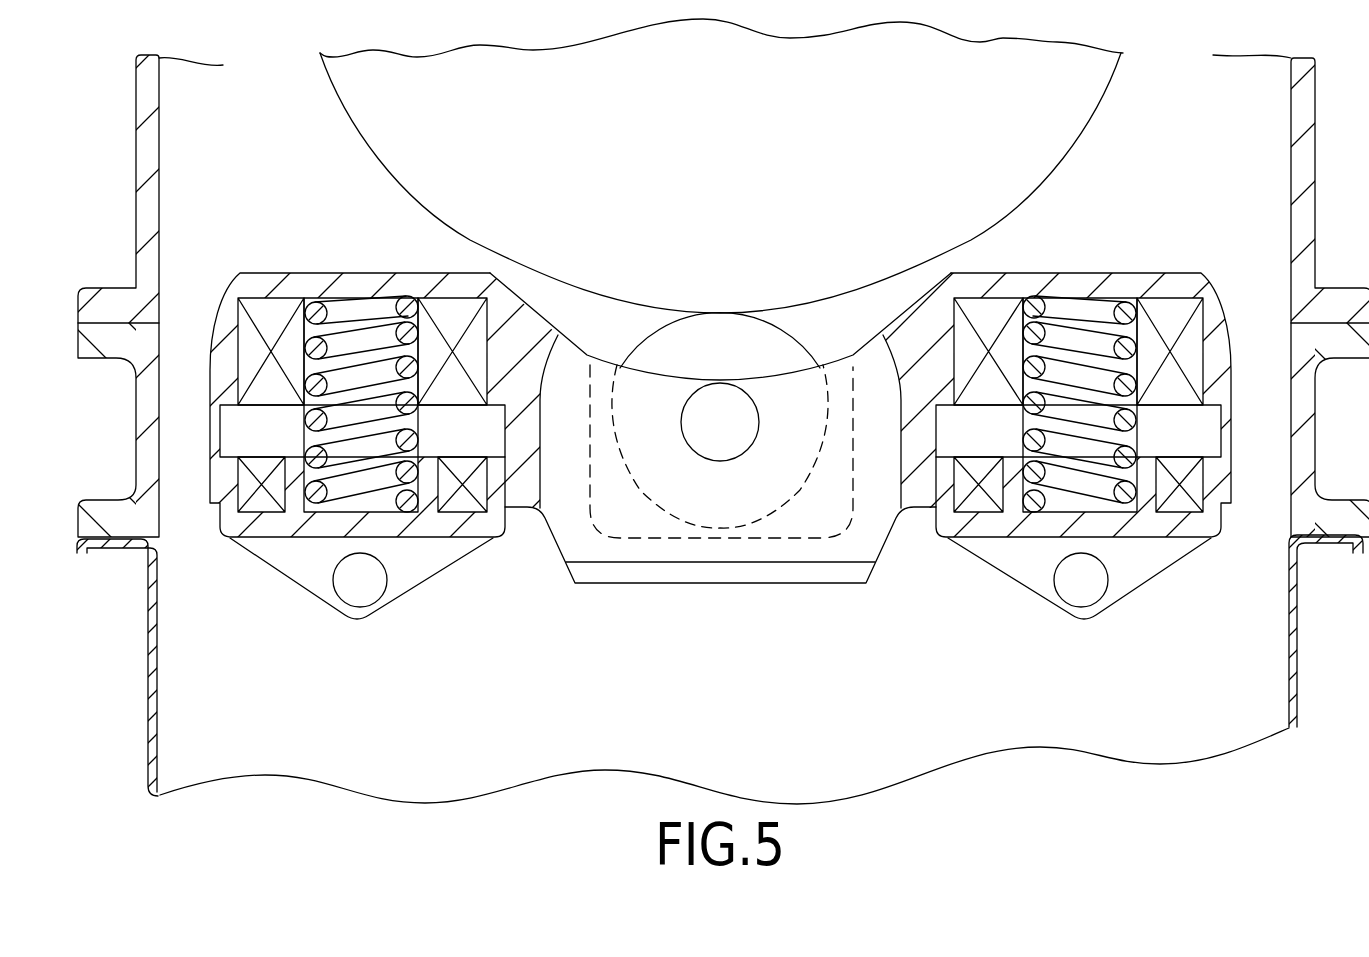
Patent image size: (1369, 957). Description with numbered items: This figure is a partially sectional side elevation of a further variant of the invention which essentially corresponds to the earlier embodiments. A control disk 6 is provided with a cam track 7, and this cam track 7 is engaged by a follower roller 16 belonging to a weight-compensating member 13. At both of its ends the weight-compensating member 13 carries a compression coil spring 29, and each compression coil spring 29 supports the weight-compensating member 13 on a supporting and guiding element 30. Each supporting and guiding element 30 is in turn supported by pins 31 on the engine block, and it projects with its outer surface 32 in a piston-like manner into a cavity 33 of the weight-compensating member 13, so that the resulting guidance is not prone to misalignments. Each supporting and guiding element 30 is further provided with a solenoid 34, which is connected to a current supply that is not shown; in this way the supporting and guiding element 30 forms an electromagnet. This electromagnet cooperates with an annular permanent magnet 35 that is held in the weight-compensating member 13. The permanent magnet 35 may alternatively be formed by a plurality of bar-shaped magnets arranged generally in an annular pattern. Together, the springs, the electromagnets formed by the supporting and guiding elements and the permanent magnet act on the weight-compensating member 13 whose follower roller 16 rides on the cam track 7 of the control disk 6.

The control disk 6 is at (1048, 60).
The cam track 7 is at (1102, 102).
The weight-compensating member 13 is at (872, 528).
The follower roller 16 is at (780, 350).
The compression coil spring 29 is at (340, 318).
The supporting and guiding element 30 is at (264, 594).
The pins 31 is at (370, 590).
The outer surface 32 is at (505, 512).
The cavity 33 is at (245, 428).
The solenoid 34 is at (470, 507).
The annular permanent magnet 35 is at (243, 338).